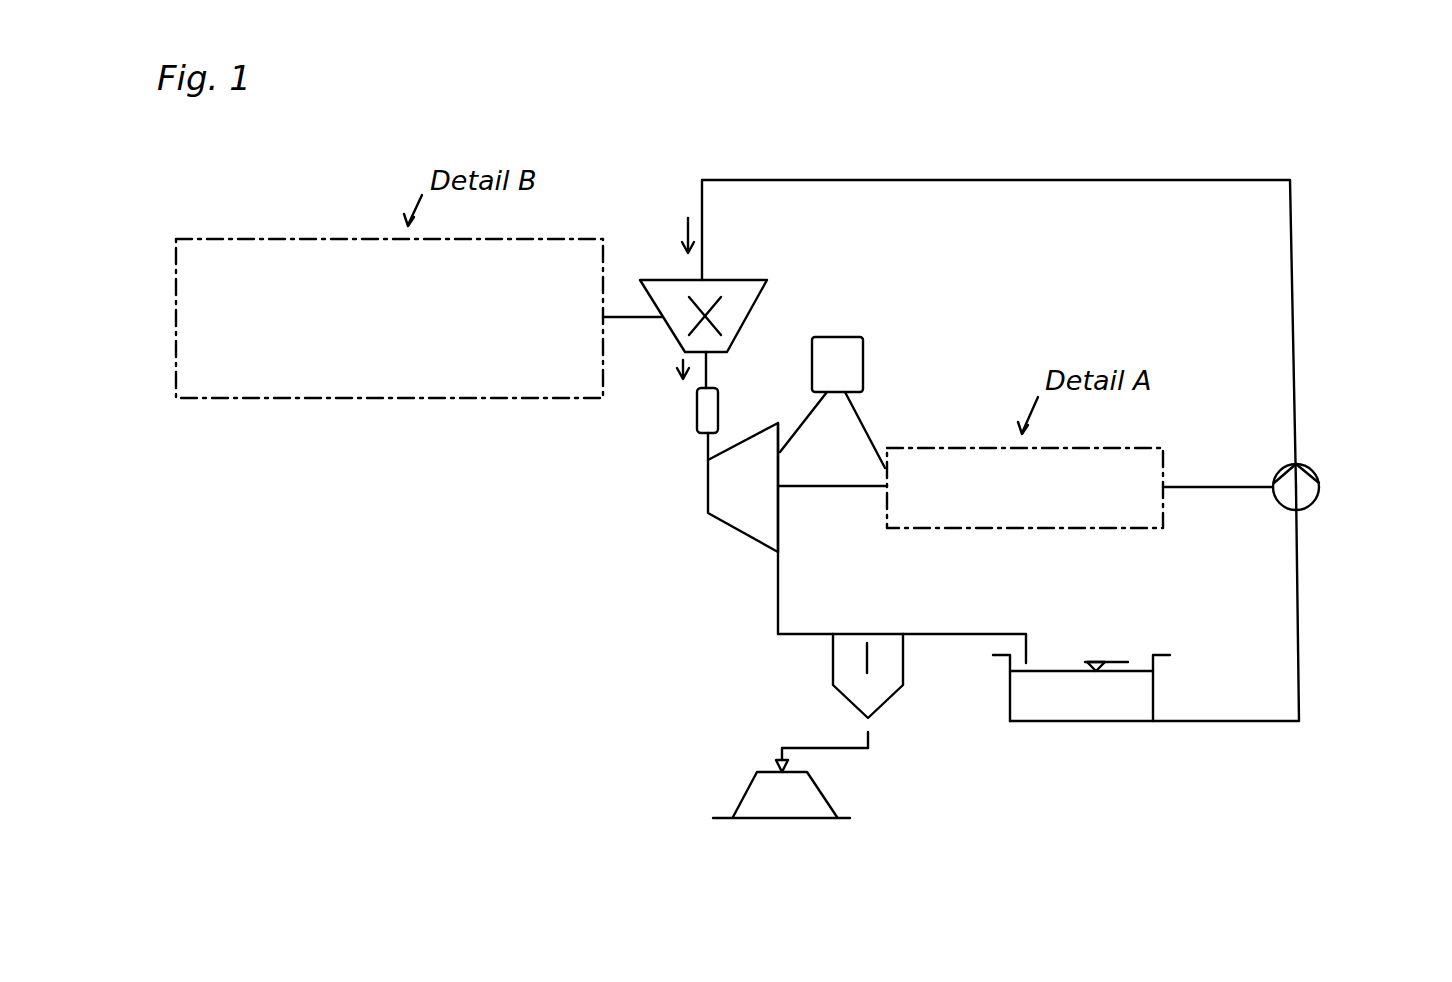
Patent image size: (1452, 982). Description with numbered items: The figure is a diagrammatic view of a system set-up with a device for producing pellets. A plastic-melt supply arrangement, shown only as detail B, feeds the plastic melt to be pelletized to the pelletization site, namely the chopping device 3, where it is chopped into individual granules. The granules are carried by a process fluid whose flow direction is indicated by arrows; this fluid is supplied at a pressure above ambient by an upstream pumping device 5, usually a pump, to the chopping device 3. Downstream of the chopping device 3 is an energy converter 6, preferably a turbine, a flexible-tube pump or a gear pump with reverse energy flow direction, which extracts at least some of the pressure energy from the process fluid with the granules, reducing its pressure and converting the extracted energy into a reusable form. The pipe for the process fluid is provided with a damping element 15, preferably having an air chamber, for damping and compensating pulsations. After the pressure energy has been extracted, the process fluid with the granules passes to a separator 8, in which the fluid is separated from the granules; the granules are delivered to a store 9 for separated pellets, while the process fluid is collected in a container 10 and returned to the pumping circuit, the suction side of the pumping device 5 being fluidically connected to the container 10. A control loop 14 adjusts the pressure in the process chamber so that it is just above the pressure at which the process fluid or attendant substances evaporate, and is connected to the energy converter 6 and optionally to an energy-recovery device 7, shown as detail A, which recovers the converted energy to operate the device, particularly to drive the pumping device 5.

The chopping device 3 is at (745, 307).
The pumping device 5 is at (1293, 500).
The energy converter 6 is at (737, 507).
The energy-recovery device 7 is at (975, 473).
The separator 8 is at (882, 698).
The store 9 is at (752, 792).
The container 10 is at (1100, 705).
The control loop 14 is at (838, 362).
The damping element 15 is at (705, 409).